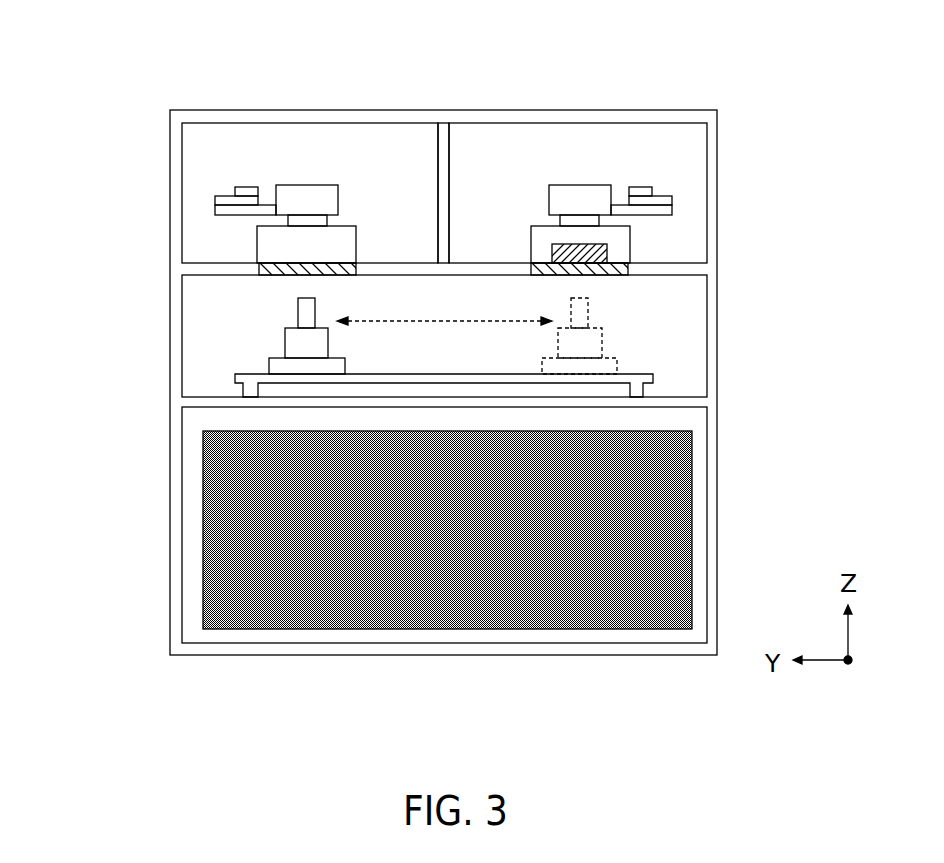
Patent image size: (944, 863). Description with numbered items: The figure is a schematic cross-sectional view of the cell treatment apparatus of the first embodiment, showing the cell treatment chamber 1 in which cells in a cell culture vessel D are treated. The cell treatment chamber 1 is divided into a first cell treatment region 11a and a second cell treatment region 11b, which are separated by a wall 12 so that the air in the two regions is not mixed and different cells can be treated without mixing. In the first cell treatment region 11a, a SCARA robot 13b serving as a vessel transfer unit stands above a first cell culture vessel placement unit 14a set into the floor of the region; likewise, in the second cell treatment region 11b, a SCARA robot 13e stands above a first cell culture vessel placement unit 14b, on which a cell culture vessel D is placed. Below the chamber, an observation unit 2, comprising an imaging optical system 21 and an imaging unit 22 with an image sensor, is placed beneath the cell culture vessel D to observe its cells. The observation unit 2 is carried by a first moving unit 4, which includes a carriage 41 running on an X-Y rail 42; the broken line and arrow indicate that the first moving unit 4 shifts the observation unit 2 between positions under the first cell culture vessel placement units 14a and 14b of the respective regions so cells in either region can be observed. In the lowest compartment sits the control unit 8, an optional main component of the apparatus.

The cell treatment chamber 1 is at (518, 62).
The first cell treatment region 11a is at (412, 140).
The wall 12 is at (450, 140).
The second cell treatment region 11b is at (493, 140).
The SCARA robot 13b is at (306, 197).
The SCARA robot 13e is at (580, 197).
The cell culture vessel D is at (610, 253).
The first cell culture vessel placement unit 14a is at (287, 278).
The first cell culture vessel placement unit 14b is at (610, 277).
The observation unit 2 is at (338, 333).
The imaging optical system 21 is at (300, 311).
The imaging unit 22 is at (298, 341).
The first moving unit 4 is at (340, 391).
The carriage 41 is at (280, 366).
The X-Y rail 42 is at (245, 384).
The control unit 8 is at (445, 582).